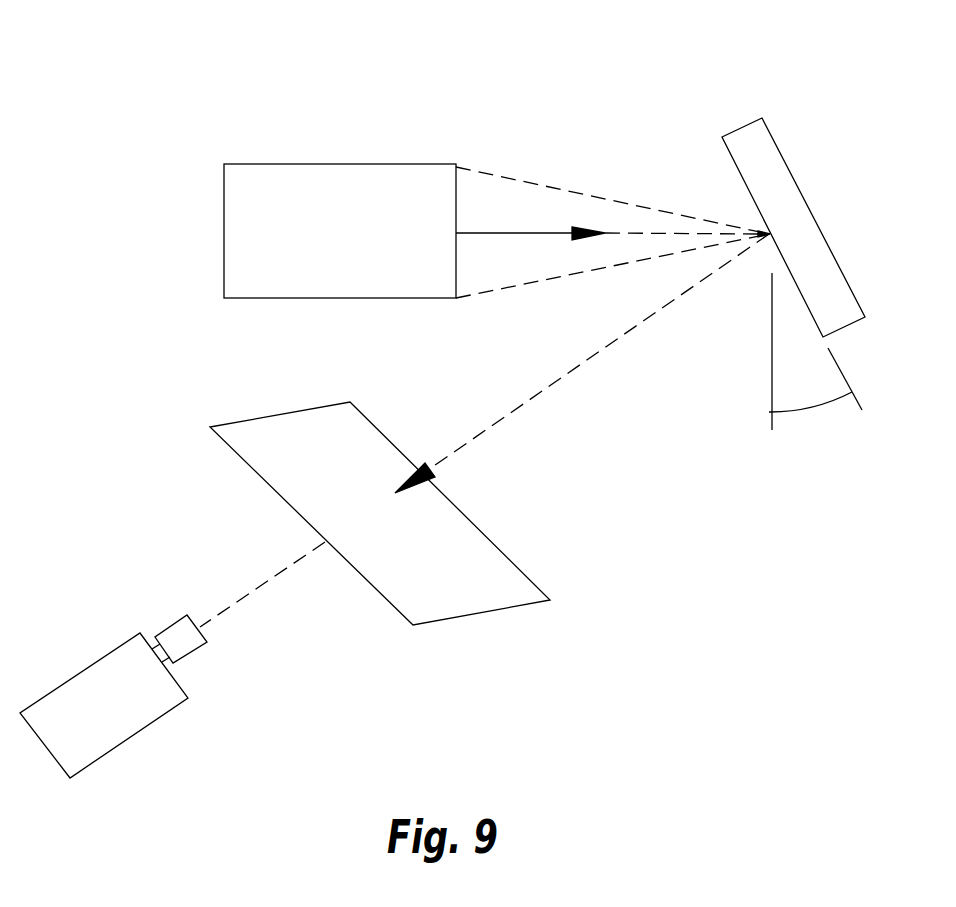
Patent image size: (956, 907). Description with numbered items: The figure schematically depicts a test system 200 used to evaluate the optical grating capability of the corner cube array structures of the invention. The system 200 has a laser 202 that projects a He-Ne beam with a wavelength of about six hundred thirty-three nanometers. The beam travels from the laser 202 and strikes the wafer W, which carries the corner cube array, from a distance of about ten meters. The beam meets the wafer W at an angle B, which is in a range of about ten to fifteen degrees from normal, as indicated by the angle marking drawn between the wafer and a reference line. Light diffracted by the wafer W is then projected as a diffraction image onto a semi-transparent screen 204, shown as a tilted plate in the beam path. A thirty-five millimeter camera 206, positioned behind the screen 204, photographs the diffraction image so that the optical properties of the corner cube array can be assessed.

The test system 200 is at (197, 110).
The laser 202 is at (355, 241).
The semi-transparent screen 204 is at (443, 563).
The 35 mm camera 206 is at (143, 730).
The wafer W is at (775, 135).
The angle B is at (815, 407).